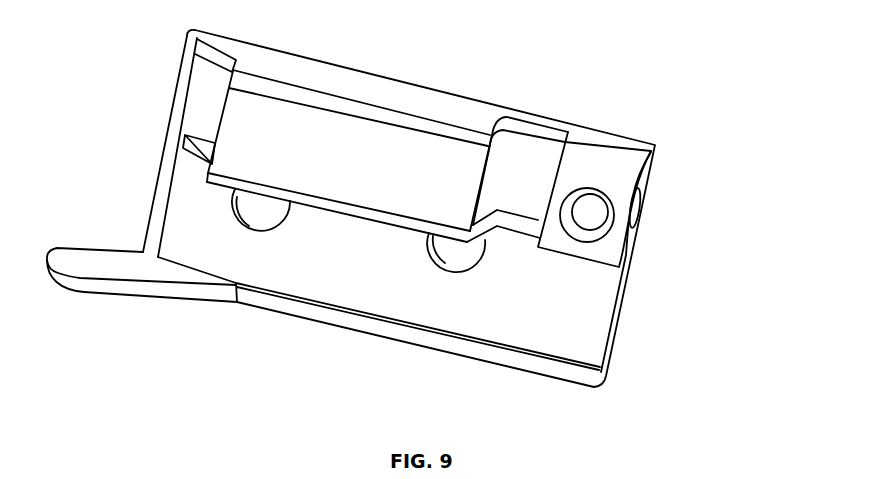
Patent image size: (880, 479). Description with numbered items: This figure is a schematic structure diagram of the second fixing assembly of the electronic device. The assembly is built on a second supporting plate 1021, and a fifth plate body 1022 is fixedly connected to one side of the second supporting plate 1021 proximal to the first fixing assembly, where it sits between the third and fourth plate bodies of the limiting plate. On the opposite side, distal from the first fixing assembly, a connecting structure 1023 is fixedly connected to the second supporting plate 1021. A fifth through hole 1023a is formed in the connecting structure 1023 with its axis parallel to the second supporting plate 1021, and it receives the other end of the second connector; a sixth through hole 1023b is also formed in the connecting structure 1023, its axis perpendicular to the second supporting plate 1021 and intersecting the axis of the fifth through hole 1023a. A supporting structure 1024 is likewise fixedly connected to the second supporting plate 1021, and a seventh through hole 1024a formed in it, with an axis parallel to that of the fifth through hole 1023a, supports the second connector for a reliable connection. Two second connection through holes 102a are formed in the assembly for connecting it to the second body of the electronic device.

The second supporting plate 1021 is at (350, 256).
The fifth plate body 1022 is at (107, 260).
The connecting structure 1023 is at (603, 173).
The fifth through hole 1023a is at (637, 214).
The sixth through hole 1023b is at (590, 212).
The supporting structure 1024 is at (370, 150).
The seventh through hole 1024a is at (212, 110).
The second connection through hole 102a is at (266, 204).